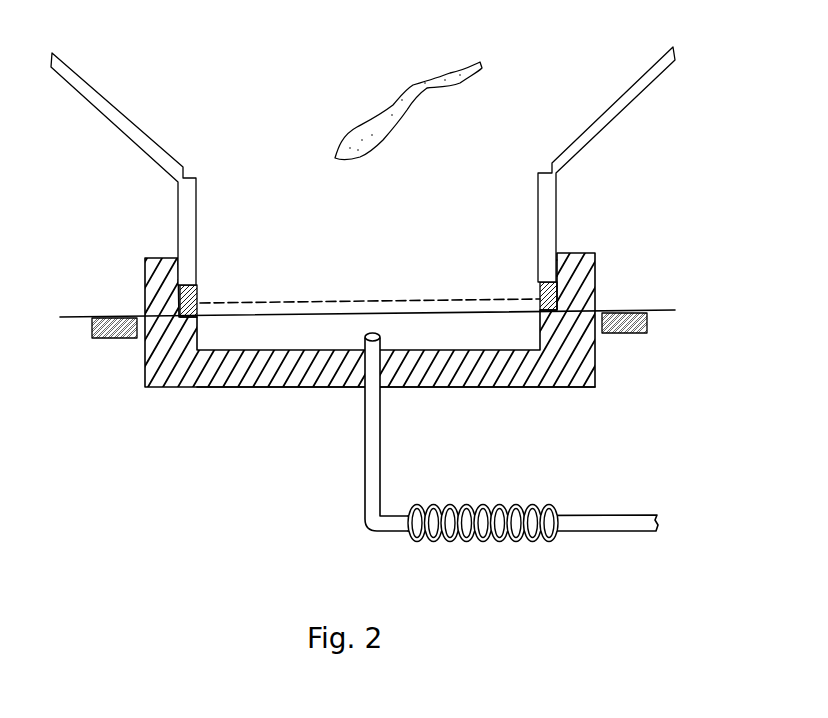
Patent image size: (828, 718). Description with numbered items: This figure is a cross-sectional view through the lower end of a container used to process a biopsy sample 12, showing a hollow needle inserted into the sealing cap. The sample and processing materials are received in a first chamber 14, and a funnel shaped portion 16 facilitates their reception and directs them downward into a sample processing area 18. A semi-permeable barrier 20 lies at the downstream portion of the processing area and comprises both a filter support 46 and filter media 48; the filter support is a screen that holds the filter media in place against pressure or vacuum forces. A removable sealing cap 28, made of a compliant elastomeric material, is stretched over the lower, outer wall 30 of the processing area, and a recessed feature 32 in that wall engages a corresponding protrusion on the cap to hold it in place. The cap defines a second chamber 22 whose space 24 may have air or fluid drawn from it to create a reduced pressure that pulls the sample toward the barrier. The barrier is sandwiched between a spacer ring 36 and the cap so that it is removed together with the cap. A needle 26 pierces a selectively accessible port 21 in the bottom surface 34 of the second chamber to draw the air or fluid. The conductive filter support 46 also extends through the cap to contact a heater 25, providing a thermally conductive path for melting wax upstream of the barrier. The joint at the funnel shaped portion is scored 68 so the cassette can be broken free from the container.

The biopsy sample 12 is at (480, 63).
The first chamber 14 is at (206, 44).
The funnel shaped portion 16 is at (120, 112).
The sample processing area 18 is at (514, 225).
The semi-permeable barrier 20 is at (232, 288).
The selectively accessible port 21 is at (360, 392).
The second chamber 22 is at (521, 347).
The space 24 is at (249, 347).
The heater 25 is at (617, 310).
The needle 26 is at (370, 513).
The sealing cap 28 is at (160, 373).
The lower, outer wall 30 is at (178, 260).
The recessed feature 32 is at (185, 272).
The bottom surface 34 is at (498, 388).
The spacer ring 36 is at (540, 300).
The filter support 46 is at (340, 315).
The filter media 48 is at (378, 300).
The scored joint 68 is at (550, 170).